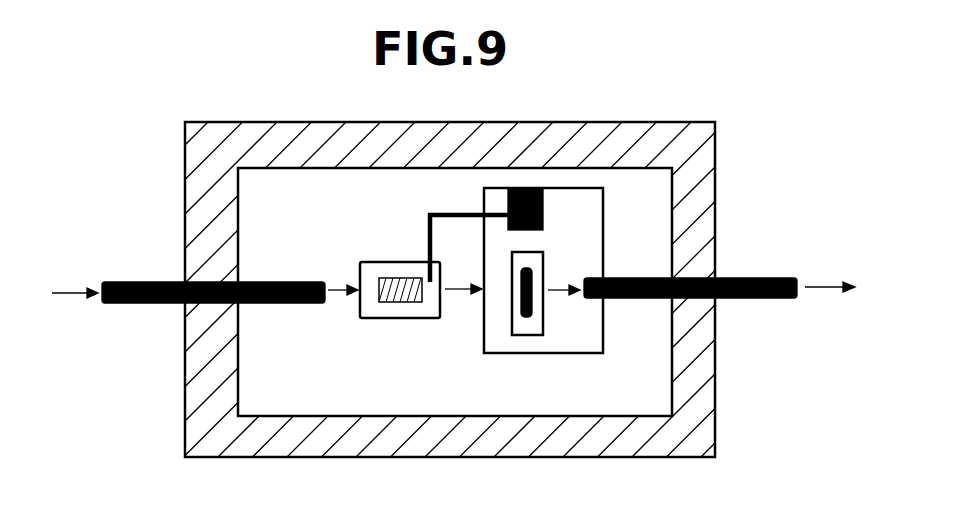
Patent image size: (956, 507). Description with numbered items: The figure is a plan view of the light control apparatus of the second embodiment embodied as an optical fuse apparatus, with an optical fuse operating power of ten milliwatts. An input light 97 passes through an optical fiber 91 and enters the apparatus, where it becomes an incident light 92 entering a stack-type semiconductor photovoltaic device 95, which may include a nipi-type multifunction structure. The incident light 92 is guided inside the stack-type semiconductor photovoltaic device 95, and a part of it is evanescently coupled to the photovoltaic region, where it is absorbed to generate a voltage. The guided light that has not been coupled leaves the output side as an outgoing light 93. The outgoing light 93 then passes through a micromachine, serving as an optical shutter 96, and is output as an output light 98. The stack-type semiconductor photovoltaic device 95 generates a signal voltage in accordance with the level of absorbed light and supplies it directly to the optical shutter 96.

The optical fiber 91 is at (156, 281).
The incident light 92 is at (337, 294).
The outgoing light 93 is at (457, 295).
The stack-type semiconductor photovoltaic device 95 is at (385, 268).
The micromachine (optical shutter) 96 is at (583, 202).
The input light 97 is at (68, 296).
The output light 98 is at (822, 290).